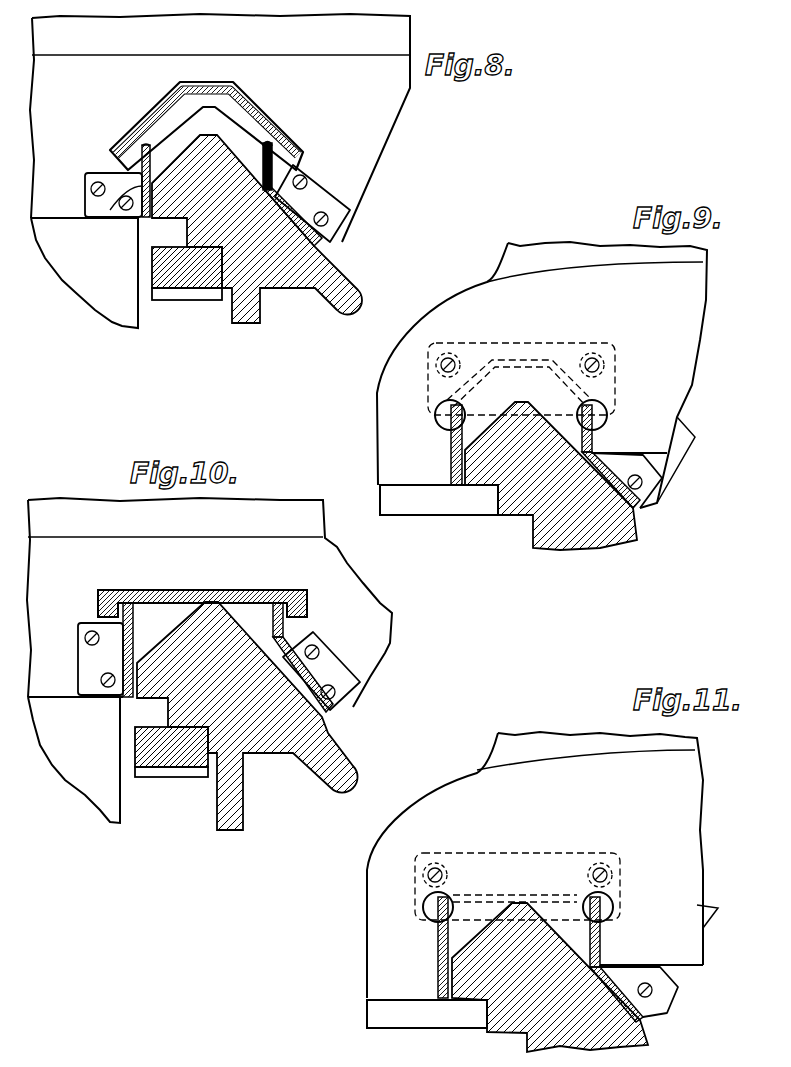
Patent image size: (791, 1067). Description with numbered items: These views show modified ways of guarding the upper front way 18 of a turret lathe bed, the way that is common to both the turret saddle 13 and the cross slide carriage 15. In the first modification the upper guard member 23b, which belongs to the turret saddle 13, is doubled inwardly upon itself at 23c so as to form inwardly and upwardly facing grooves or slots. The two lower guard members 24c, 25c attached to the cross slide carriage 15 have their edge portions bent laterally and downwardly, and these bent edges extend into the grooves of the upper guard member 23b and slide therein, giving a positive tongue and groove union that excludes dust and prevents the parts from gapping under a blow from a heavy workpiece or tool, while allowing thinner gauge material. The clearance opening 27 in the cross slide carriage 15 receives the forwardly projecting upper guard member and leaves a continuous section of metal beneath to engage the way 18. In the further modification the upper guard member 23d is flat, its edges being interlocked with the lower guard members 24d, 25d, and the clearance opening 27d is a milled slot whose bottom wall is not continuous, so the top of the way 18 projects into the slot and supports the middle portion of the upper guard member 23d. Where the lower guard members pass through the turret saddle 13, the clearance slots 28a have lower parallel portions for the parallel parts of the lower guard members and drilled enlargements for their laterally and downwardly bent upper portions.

In FIG. 9, the turret saddle 13 is at (677, 337).
In FIG. 11, the turret saddle 13 is at (680, 797).
In FIG. 8, the cross slide carriage 15 is at (353, 187).
In FIG. 9, the cross slide carriage 15 is at (677, 437).
In FIG. 10, the cross slide carriage 15 is at (368, 643).
In FIG. 11, the cross slide carriage 15 is at (682, 950).
In FIG. 8, the upper front way 18 is at (193, 173).
In FIG. 9, the upper front way 18 is at (523, 493).
In FIG. 10, the upper front way 18 is at (232, 592).
In FIG. 11, the upper front way 18 is at (523, 927).
In FIG. 8, the upper guard member 23b is at (267, 120).
In FIG. 9, the upper guard member 23b is at (537, 360).
In FIG. 8, the inwardly doubled portion of upper guard member 23c is at (278, 160).
In FIG. 10, the upper guard member 23d is at (268, 594).
In FIG. 11, the upper guard member 23d is at (520, 870).
In FIG. 8, the lower guard member 24c is at (110, 190).
In FIG. 9, the lower guard member 24c is at (450, 443).
In FIG. 10, the lower guard member 24d is at (123, 652).
In FIG. 11, the lower guard member 24d is at (437, 938).
In FIG. 8, the lower guard member 25c is at (280, 187).
In FIG. 9, the lower guard member 25c is at (593, 445).
In FIG. 10, the lower guard member 25d is at (280, 632).
In FIG. 11, the lower guard member 25d is at (602, 942).
In FIG. 8, the clearance opening 27 is at (176, 89).
In FIG. 10, the clearance opening 27d is at (155, 613).
In FIG. 9, the clearance slots 28a is at (603, 400).
In FIG. 11, the clearance slots 28a is at (603, 895).